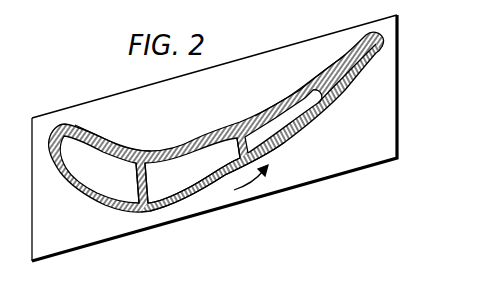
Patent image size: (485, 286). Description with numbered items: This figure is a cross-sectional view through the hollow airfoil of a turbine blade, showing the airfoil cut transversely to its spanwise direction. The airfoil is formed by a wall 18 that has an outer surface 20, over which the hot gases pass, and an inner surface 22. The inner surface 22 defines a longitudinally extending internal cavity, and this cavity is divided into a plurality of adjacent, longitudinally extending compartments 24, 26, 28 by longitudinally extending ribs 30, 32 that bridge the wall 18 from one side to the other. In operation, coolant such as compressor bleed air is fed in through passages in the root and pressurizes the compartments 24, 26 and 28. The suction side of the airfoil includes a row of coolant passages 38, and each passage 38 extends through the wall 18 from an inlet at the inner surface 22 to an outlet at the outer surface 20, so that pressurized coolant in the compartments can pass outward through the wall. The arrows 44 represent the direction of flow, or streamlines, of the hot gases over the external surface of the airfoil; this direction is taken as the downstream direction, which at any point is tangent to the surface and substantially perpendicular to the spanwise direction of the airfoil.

The wall 18 is at (209, 143).
The outer surface 20 is at (126, 148).
The inner surface 22 is at (181, 164).
The compartment 24 is at (112, 178).
The compartment 26 is at (204, 182).
The compartment 28 is at (281, 124).
The rib 30 is at (139, 182).
The rib 32 is at (238, 148).
The coolant passage 38 is at (218, 188).
The arrow 44 is at (265, 177).